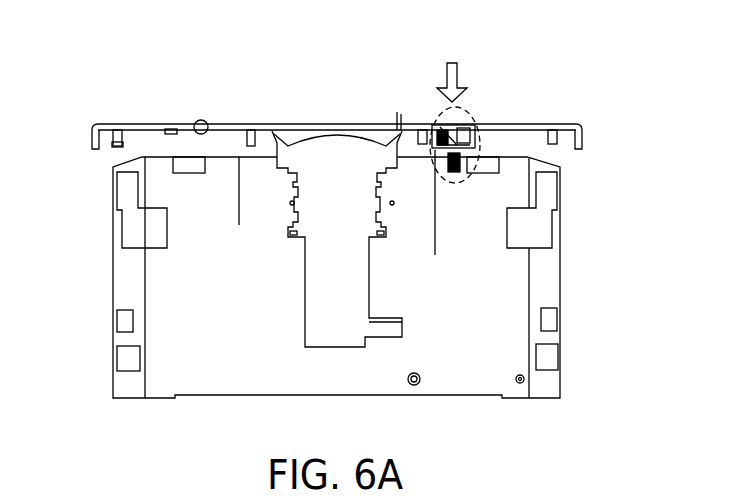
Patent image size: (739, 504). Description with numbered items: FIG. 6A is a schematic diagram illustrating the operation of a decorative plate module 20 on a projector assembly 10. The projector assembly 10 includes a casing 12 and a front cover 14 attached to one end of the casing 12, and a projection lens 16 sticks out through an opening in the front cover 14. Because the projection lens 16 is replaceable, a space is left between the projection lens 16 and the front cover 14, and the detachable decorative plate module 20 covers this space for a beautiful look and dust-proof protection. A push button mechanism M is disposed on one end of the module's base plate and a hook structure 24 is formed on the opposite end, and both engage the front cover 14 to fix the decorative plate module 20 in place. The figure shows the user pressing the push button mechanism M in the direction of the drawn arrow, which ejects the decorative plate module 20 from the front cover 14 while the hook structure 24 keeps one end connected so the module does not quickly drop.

The projector assembly 10 is at (58, 57).
The casing 12 is at (564, 272).
The front cover 14 is at (563, 124).
The projection lens 16 is at (332, 145).
The decorative plate module 20 is at (397, 128).
The hook structure 24 is at (201, 121).
The push button mechanism M is at (470, 108).